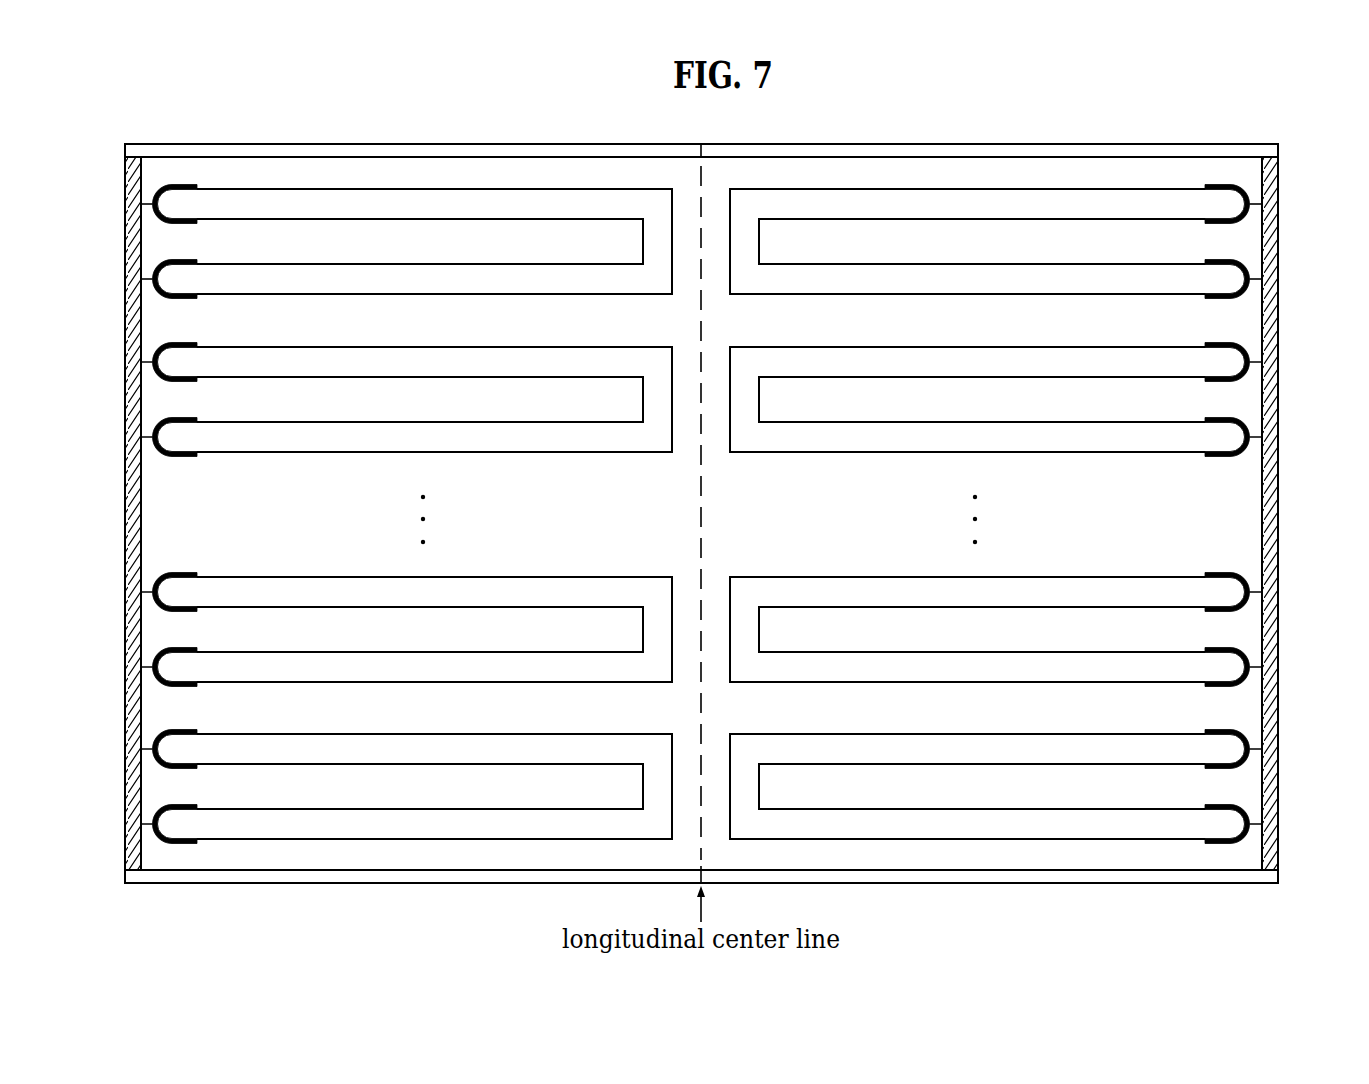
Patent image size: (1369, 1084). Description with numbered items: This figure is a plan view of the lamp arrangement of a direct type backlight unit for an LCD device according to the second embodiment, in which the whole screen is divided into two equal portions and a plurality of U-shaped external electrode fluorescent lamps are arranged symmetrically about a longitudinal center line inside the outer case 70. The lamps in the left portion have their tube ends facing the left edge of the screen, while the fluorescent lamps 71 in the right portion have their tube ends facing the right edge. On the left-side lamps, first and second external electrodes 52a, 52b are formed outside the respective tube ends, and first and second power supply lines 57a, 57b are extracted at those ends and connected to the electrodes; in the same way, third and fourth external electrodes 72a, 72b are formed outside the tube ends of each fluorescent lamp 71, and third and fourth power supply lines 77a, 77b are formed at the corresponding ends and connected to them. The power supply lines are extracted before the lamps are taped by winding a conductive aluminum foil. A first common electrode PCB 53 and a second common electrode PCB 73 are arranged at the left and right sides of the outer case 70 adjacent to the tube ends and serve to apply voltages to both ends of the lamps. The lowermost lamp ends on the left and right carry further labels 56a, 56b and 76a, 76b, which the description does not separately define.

The outer case 70 is at (415, 150).
The fluorescent lamp 71 is at (975, 202).
The first external electrode 52a is at (178, 184).
The second external electrode 52b is at (166, 260).
The first power supply line 57a is at (141, 203).
The second power supply line 57b is at (128, 292).
The first common electrode PCB 53 is at (128, 352).
The last U-shaped channel end electrode (upper) 56a is at (125, 748).
The last U-shaped channel end electrode (lower) 56b is at (125, 824).
The third external electrode 72a is at (1221, 184).
The fourth external electrode 72b is at (1236, 260).
The third power supply line 77a is at (1261, 205).
The fourth power supply line 77b is at (1274, 293).
The second common electrode PCB 73 is at (1276, 350).
The last right U-shaped channel end electrode (upper) 76a is at (1278, 748).
The last right U-shaped channel end electrode (lower) 76b is at (1278, 824).